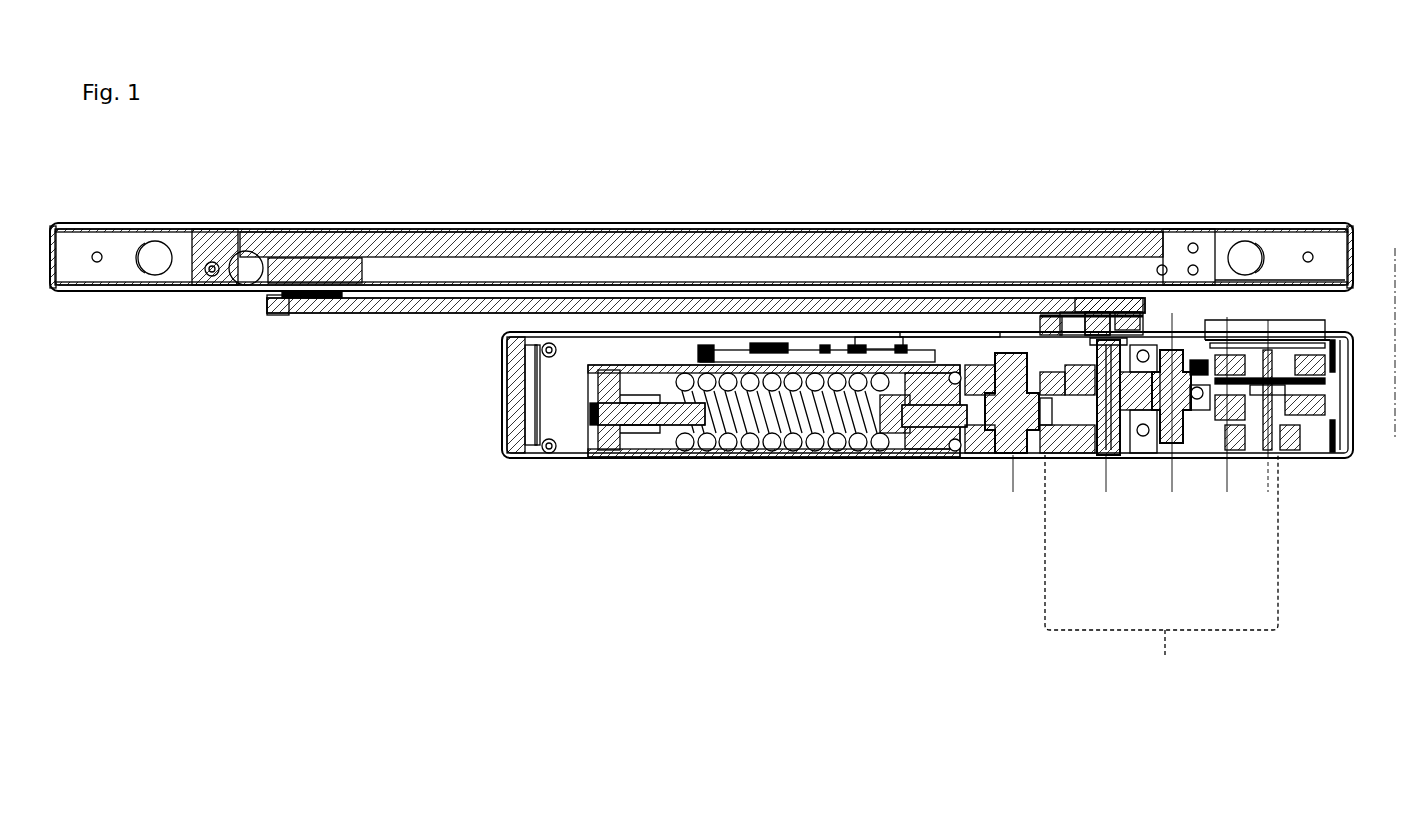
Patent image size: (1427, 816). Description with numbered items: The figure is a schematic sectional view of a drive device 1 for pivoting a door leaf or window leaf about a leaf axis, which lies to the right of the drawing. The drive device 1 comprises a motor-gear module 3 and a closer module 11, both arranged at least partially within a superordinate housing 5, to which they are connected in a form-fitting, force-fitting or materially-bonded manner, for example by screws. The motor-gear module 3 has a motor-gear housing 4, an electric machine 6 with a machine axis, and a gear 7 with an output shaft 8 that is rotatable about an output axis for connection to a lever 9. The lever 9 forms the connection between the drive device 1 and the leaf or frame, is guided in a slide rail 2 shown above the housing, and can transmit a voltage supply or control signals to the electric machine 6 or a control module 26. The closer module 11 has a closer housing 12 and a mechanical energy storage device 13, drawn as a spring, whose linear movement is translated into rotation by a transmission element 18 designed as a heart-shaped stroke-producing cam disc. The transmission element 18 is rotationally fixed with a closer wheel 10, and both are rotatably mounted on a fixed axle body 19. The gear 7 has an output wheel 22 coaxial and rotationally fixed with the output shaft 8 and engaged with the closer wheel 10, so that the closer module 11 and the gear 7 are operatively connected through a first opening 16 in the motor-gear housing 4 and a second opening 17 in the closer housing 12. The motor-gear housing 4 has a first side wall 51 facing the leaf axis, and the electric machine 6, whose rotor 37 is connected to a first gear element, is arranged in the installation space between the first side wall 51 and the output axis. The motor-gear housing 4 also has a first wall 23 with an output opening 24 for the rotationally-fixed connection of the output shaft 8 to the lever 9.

The drive device 1 is at (440, 525).
The slide rail 2 is at (585, 265).
The motor-gear module 3 is at (1198, 368).
The motor-gear housing 4 is at (1305, 318).
The superordinate housing 5 is at (547, 460).
The electric machine 6 is at (1280, 332).
The gear 7 is at (1161, 570).
The output shaft 8 is at (1115, 452).
The lever 9 is at (378, 316).
The closer wheel 10 is at (1047, 400).
The closer module 11 is at (620, 450).
The closer housing 12 is at (968, 343).
The mechanical energy storage device 13 is at (757, 450).
The first opening 16 is at (1035, 330).
The second opening 17 is at (1035, 330).
The transmission element 18 is at (1062, 452).
The axle body 19 is at (997, 455).
The output wheel 22 is at (1120, 312).
The first wall 23 is at (1050, 330).
The output opening 24 is at (1078, 300).
The control module 26 is at (727, 333).
The rotor 37 is at (1300, 350).
The first side wall 51 is at (1325, 395).